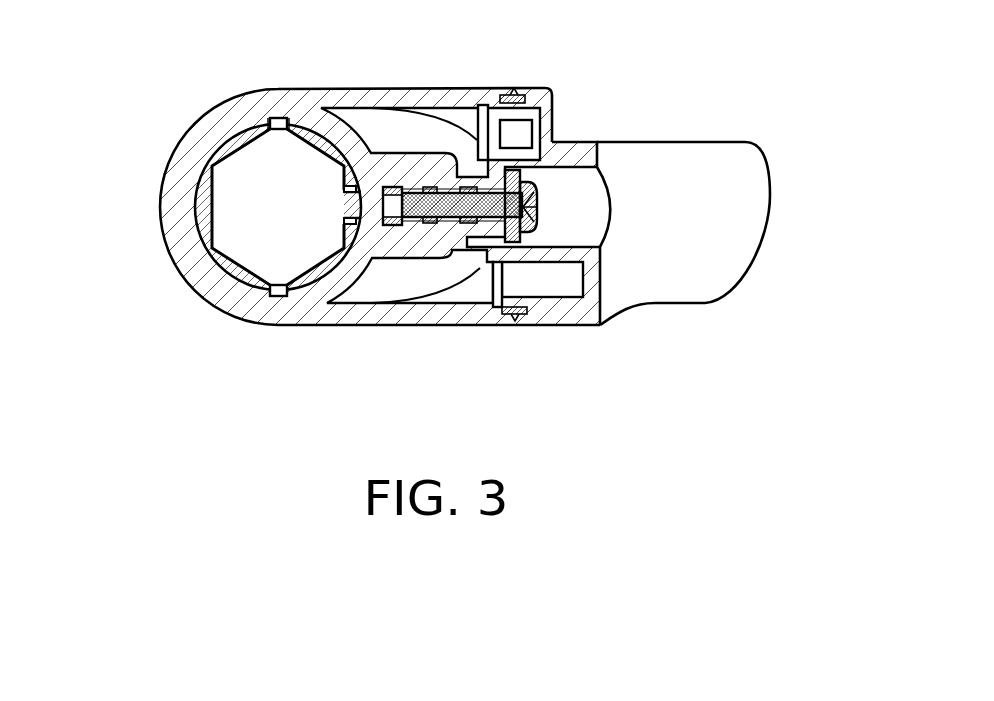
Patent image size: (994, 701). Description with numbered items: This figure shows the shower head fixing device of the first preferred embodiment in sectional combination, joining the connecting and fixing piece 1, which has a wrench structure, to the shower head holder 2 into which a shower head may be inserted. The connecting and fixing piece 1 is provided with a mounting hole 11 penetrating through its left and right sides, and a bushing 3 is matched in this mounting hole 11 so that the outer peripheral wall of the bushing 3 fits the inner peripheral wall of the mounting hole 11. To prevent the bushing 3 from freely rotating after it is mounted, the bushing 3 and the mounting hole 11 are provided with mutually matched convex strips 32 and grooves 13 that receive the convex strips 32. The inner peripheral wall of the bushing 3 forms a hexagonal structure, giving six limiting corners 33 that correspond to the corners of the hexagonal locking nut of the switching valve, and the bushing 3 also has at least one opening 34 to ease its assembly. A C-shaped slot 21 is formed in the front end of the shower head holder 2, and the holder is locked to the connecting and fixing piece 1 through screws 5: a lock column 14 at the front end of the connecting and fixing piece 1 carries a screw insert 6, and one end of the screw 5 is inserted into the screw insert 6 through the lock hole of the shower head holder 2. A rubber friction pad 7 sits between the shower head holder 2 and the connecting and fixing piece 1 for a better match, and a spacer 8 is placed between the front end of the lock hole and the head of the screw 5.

The connecting and fixing piece 1 is at (180, 202).
The mounting hole 11 is at (215, 152).
The groove 13 is at (273, 118).
The shower head holder 2 is at (560, 310).
The C-shaped slot 21 is at (676, 170).
The bushing 3 is at (207, 222).
The convex strip 32 is at (277, 120).
The limiting corner 33 is at (237, 263).
The opening 34 is at (353, 208).
The screw 5 is at (487, 210).
The screw insert 6 is at (447, 192).
The rubber friction pad 7 is at (520, 313).
The spacer 8 is at (525, 168).
The lock column 14 is at (487, 188).